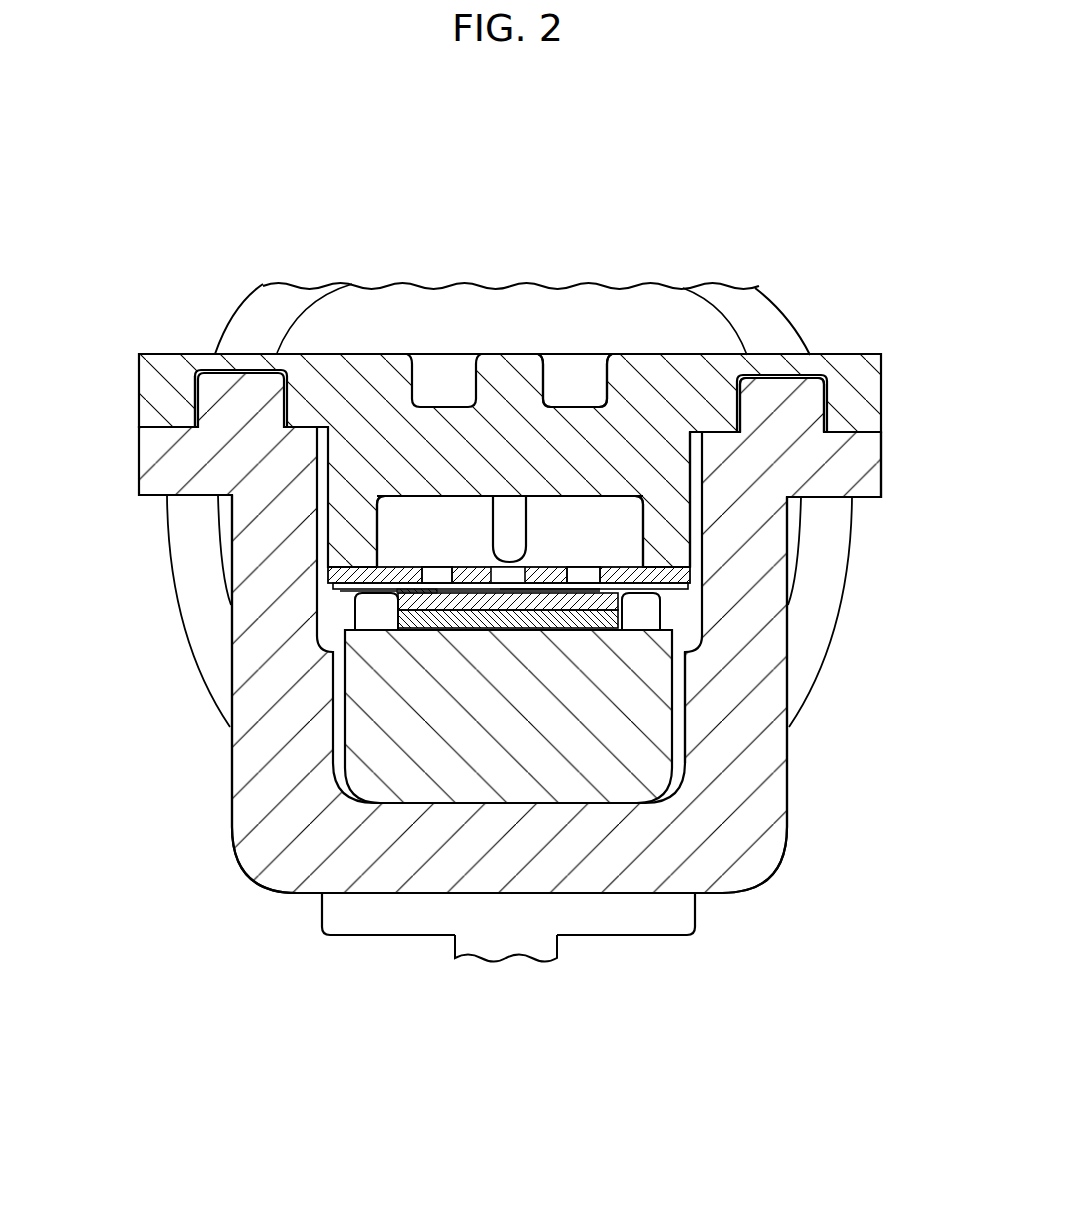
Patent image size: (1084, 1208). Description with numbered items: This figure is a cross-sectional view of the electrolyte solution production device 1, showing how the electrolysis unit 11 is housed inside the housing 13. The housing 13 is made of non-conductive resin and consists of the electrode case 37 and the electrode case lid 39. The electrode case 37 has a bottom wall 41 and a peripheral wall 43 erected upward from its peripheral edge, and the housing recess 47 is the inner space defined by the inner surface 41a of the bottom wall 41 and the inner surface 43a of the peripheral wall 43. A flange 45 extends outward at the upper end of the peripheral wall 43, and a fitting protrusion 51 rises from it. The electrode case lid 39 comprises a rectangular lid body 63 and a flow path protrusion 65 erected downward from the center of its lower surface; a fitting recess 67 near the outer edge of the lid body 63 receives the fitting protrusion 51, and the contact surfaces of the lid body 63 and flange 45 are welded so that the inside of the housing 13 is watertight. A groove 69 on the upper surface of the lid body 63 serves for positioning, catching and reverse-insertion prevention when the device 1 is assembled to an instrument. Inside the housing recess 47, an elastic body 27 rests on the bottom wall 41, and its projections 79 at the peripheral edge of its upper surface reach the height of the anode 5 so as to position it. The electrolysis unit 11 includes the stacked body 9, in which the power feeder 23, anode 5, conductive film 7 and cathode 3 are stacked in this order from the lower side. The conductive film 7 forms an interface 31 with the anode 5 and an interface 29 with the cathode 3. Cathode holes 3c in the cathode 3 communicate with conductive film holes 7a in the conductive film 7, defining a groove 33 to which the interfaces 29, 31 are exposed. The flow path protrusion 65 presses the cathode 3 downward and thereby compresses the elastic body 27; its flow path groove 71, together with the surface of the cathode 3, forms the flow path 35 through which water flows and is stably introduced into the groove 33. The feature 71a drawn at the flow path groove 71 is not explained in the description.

The electrolyte solution production device 1 is at (178, 162).
The housing 13 is at (506, 642).
The electrode case lid 39 is at (856, 355).
The lid body 63 is at (378, 377).
The flow path protrusion 65 is at (668, 515).
The fitting recess 67 is at (220, 372).
The groove 69 is at (580, 395).
The flow path 35 is at (416, 530).
The flow path groove 71 is at (427, 495).
The gas introduction hole in partition 71a is at (508, 522).
The electrode case 37 is at (931, 601).
The fitting protrusion 51 is at (772, 395).
The flange 45 is at (857, 458).
The peripheral wall 43 is at (747, 760).
The inner surface of peripheral wall 43a is at (673, 750).
The bottom wall 41 is at (455, 860).
The inner surface of bottom wall 41a is at (503, 744).
The housing recess 47 is at (340, 750).
The elastic body 27 is at (515, 803).
The projection 79 is at (645, 612).
The electrolysis unit 11 is at (365, 506).
The stacked body 9 is at (91, 684).
The cathode 3 is at (360, 580).
The cathode hole 3c is at (477, 560).
The groove 33 is at (570, 572).
The conductive film 7 is at (400, 587).
The conductive film hole 7a is at (588, 592).
The anode 5 is at (470, 601).
The interface 29 is at (596, 588).
The power feeder 23 is at (512, 601).
The interface 31 is at (540, 618).